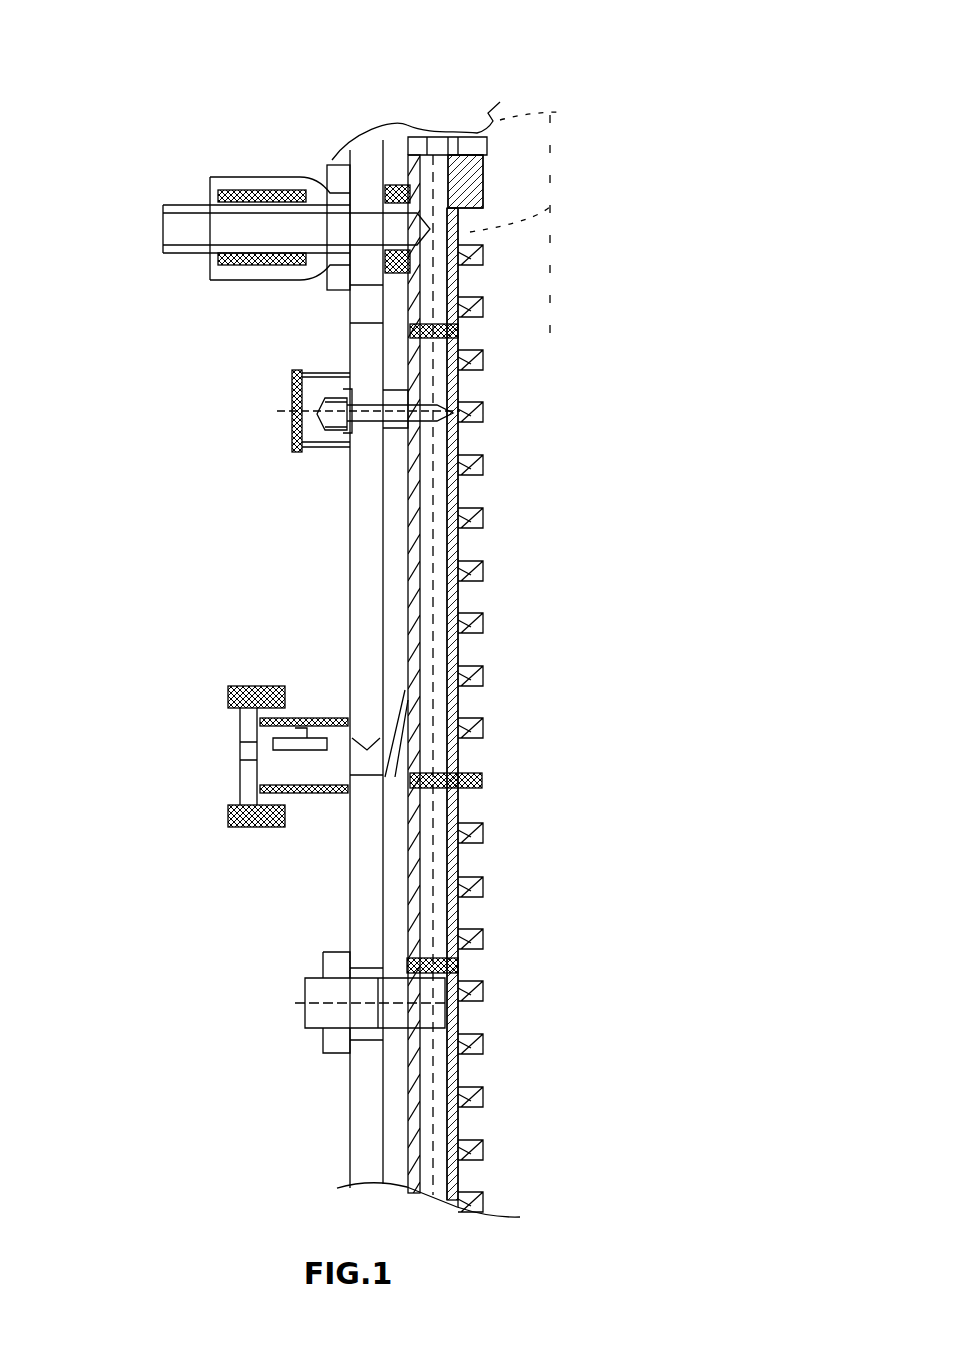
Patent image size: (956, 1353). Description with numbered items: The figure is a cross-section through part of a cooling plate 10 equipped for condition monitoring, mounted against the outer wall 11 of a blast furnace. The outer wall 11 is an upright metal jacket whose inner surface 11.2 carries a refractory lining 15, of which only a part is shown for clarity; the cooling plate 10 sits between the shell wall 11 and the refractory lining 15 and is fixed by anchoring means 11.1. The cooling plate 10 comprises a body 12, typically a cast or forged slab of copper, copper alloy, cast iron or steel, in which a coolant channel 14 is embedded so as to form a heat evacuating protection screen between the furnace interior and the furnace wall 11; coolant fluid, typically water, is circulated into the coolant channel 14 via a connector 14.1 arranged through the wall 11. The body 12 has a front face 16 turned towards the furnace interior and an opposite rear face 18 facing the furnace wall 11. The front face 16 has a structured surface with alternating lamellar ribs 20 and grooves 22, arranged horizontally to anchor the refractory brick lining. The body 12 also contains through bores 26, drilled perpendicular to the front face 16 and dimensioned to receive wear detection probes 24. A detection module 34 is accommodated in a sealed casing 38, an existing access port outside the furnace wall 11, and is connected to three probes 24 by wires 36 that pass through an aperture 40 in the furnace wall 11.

The cooling plate 10 is at (500, 102).
The outer wall 11 is at (367, 553).
The anchoring means 11.1 is at (293, 418).
The inner surface 11.2 is at (393, 500).
The body 12 is at (470, 185).
The coolant channel 14 is at (435, 607).
The connector 14.1 is at (242, 222).
The refractory lining 15 is at (533, 157).
The front face 16 is at (457, 1117).
The rear face 18 is at (408, 1118).
The lamellar ribs 20 is at (483, 515).
The grooves 22 is at (458, 371).
The wear detection probes 24 is at (460, 328).
The through bores 26 is at (458, 293).
The detection module 34 is at (293, 740).
The wires 36 is at (408, 797).
The sealed casing 38 is at (312, 796).
The aperture 40 is at (380, 752).